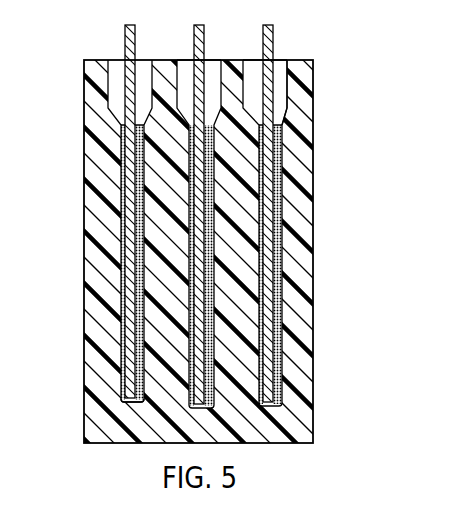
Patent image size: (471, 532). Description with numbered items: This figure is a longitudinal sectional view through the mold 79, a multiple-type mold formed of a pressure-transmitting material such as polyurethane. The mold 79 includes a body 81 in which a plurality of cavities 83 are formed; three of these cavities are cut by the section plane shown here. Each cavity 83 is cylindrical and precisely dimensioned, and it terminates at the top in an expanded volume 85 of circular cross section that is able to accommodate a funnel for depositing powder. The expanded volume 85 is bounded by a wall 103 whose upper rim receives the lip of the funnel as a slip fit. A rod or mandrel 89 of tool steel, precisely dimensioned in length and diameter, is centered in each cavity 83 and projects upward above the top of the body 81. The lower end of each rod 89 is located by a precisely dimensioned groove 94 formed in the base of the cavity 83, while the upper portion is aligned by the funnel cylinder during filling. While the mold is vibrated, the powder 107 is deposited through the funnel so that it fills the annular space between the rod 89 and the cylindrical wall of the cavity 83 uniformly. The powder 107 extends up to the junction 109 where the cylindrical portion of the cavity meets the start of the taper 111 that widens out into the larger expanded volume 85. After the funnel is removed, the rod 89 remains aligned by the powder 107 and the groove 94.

The mold 79 is at (302, 52).
The body 81 is at (84, 285).
The cavity 83 is at (122, 123).
The expanded volume 85 is at (252, 62).
The rod 89 is at (194, 29).
The groove 94 is at (127, 403).
The wall 103 is at (300, 86).
The powder 107 is at (122, 217).
The junction 109 is at (122, 128).
The taper 111 is at (281, 125).